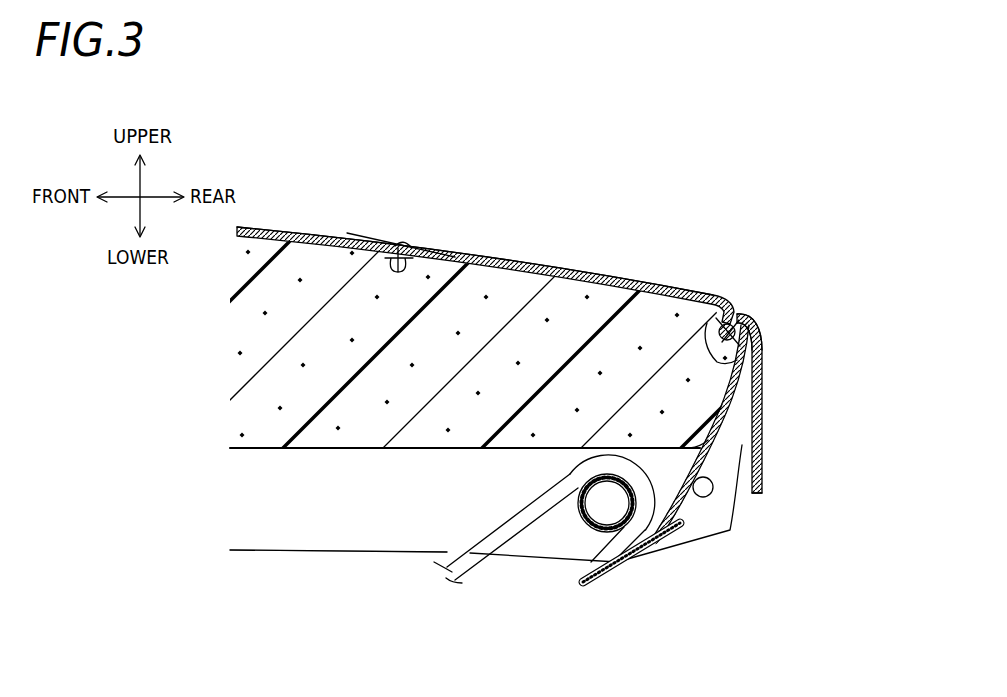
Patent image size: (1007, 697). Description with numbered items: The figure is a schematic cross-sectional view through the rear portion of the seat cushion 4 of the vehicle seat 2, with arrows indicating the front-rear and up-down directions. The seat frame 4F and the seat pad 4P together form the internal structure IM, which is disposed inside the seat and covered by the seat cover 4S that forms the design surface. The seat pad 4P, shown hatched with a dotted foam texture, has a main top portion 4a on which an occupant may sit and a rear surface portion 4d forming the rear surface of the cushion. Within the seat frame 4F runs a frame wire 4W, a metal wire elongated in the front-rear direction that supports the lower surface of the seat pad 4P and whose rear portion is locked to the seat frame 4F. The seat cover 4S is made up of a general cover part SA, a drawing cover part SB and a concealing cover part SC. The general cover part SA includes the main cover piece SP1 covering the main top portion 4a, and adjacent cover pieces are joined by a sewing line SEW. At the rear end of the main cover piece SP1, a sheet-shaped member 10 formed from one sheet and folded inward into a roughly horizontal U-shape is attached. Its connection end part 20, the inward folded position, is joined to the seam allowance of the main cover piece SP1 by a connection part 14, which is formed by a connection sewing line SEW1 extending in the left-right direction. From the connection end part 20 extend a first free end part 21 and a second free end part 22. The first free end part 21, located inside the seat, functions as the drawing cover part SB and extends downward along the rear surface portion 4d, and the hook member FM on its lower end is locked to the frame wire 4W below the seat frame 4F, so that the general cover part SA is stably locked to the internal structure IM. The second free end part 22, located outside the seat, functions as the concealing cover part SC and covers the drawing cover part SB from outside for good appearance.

The seat cushion 4 is at (514, 387).
The vehicle seat 2 is at (514, 387).
The seat cover 4S is at (508, 256).
The main top portion 4a is at (598, 273).
The seat pad 4P is at (269, 461).
The seat frame 4F is at (345, 561).
The frame wire 4W is at (470, 572).
The rear surface portion 4d is at (762, 488).
The main cover piece SP1 is at (426, 176).
The general cover part SA is at (347, 233).
The sewing line SEW is at (413, 244).
The connection sewing line SEW1 is at (750, 278).
The connection part 14 is at (712, 300).
The sheet-shaped member 10 is at (798, 427).
The connection end part 20 is at (747, 376).
The first free end part 21 is at (772, 432).
The drawing cover part SB is at (738, 408).
The second free end part 22 is at (815, 403).
The concealing cover part SC is at (762, 446).
The internal structure IM is at (350, 625).
The hook member FM is at (593, 578).